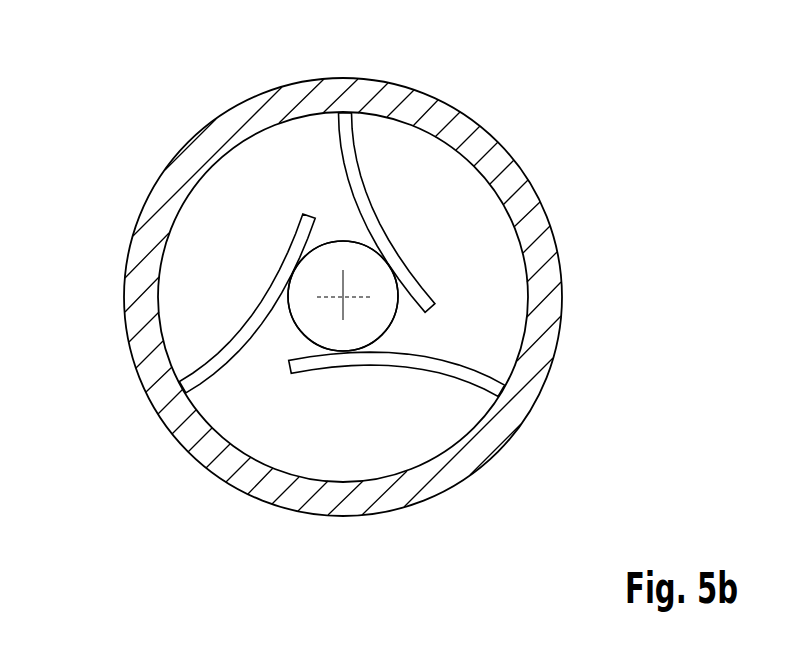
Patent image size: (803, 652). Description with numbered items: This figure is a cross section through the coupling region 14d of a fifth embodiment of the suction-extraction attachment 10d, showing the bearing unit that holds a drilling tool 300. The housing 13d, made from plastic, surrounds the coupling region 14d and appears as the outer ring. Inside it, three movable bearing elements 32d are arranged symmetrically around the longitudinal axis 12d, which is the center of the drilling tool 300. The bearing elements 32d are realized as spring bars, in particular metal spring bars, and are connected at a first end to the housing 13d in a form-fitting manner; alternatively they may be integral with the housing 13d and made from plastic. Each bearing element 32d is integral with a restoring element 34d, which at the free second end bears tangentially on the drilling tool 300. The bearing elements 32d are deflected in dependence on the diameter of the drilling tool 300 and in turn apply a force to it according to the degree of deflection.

The suction-extraction attachment 10d is at (177, 83).
The longitudinal axis 12d is at (332, 306).
The housing 13d is at (437, 107).
The coupling region 14d is at (502, 341).
The bearing element 32d is at (328, 246).
The restoring element 34d is at (352, 152).
The drilling tool 300 is at (370, 319).